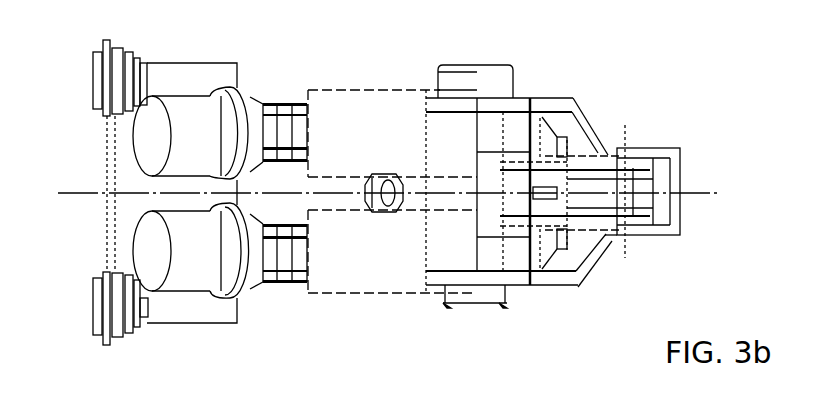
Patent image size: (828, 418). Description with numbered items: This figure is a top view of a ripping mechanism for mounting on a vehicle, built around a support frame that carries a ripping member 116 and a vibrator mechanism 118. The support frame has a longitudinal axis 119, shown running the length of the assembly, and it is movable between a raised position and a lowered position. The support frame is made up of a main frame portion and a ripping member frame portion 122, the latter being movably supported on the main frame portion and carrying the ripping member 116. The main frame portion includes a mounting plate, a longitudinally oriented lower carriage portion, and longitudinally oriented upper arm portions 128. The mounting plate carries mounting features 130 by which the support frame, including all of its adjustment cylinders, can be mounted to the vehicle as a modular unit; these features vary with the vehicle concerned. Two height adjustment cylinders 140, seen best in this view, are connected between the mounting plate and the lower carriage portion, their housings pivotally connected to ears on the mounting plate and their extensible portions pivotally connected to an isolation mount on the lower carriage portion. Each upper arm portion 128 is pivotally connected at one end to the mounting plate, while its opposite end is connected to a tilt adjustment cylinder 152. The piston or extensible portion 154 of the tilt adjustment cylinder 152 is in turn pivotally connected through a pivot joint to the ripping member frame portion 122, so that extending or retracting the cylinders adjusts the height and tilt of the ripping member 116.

The ripping member 116 is at (657, 165).
The vibrator mechanism 118 is at (542, 117).
The longitudinal axis 119 is at (85, 195).
The ripping member frame portion 122 is at (585, 112).
The longitudinally oriented upper arm portions 128 is at (282, 287).
The mounting features 130 is at (103, 78).
The height adjustment cylinders 140 is at (187, 268).
The tilt adjustment cylinder 152 is at (360, 268).
The piston or extensible portion 154 is at (492, 255).